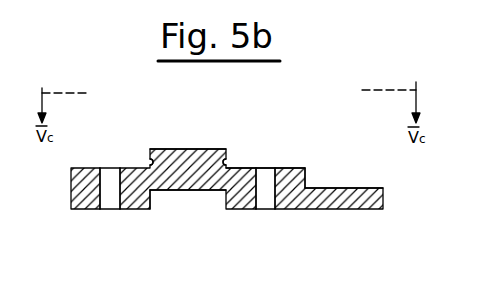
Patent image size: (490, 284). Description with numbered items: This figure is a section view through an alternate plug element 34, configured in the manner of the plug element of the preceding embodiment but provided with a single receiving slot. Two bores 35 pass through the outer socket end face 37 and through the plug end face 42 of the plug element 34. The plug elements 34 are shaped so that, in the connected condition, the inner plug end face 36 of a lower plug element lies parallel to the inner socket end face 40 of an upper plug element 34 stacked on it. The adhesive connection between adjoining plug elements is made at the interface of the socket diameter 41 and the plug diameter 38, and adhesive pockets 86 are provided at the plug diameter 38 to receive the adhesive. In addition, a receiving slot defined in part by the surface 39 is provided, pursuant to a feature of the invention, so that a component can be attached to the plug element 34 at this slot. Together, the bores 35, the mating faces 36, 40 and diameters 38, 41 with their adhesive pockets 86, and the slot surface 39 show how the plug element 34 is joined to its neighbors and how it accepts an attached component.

The plug element 34 is at (371, 209).
The bores 35 is at (108, 182).
The inner plug end face 36 is at (197, 149).
The outer socket end face 37 is at (310, 209).
The plug diameter 38 is at (229, 157).
The surface 39 is at (354, 188).
The inner socket end face 40 is at (200, 191).
The socket diameter 41 is at (157, 194).
The plug end face 42 is at (296, 168).
The adhesive pockets 86 is at (152, 162).